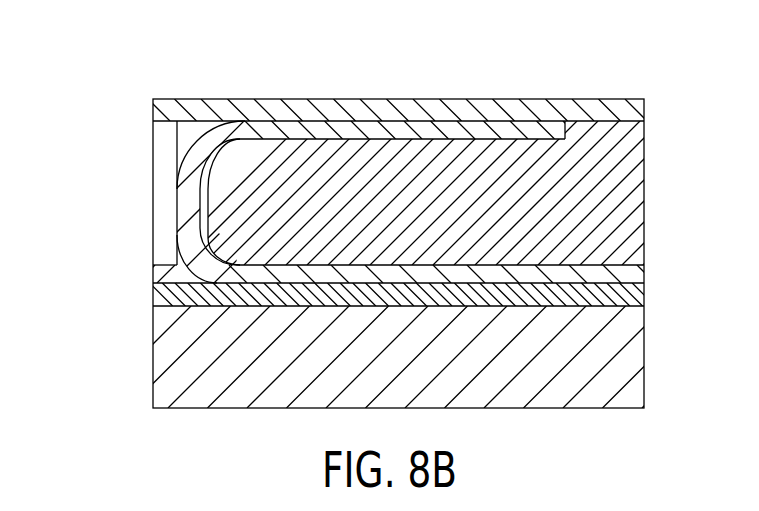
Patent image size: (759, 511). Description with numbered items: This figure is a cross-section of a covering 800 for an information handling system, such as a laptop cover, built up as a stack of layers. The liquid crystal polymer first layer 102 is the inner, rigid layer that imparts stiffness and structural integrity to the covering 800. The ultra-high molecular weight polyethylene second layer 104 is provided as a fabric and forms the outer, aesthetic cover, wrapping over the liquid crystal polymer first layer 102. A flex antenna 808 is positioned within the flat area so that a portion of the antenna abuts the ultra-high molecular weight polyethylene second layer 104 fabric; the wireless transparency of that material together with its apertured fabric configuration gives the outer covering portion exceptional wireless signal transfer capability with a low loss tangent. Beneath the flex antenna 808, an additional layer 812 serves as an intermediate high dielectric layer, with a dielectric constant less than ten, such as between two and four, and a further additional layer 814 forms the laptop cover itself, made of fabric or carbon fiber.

The covering 800 is at (92, 101).
The ultra-high molecular weight polyethylene second layer 104 is at (192, 99).
The liquid crystal polymer first layer 102 is at (623, 178).
The flex antenna 808 is at (637, 275).
The additional layer 812 is at (638, 302).
The additional layer 814 is at (637, 358).